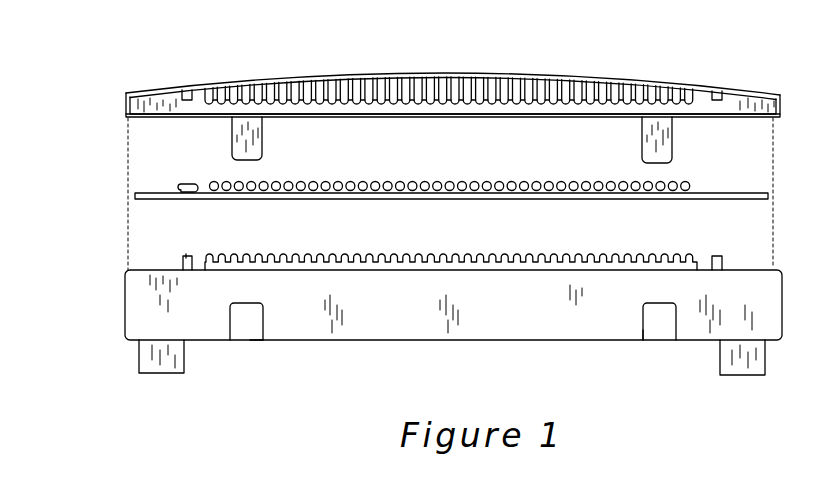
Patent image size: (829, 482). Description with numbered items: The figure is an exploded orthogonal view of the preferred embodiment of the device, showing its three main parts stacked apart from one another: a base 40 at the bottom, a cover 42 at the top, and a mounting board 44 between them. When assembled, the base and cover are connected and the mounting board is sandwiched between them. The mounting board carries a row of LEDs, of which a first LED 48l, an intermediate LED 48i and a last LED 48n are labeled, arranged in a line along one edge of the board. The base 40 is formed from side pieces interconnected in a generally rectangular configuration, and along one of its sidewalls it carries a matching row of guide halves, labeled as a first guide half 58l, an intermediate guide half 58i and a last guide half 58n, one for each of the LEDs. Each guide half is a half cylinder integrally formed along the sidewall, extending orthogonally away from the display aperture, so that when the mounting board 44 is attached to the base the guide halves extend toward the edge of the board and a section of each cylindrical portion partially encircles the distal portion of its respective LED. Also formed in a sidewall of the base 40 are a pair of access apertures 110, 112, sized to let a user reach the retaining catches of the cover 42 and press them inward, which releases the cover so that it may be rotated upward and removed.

The cover 42 is at (126, 98).
The mounting board 44 is at (136, 194).
The LED 48l is at (213, 182).
The LED 48i is at (470, 182).
The LED 48n is at (685, 182).
The base 40 is at (124, 292).
The guide half 58l is at (213, 262).
The guide half 58i is at (393, 262).
The guide half 58n is at (683, 262).
The access aperture 110 is at (258, 341).
The access aperture 112 is at (645, 341).